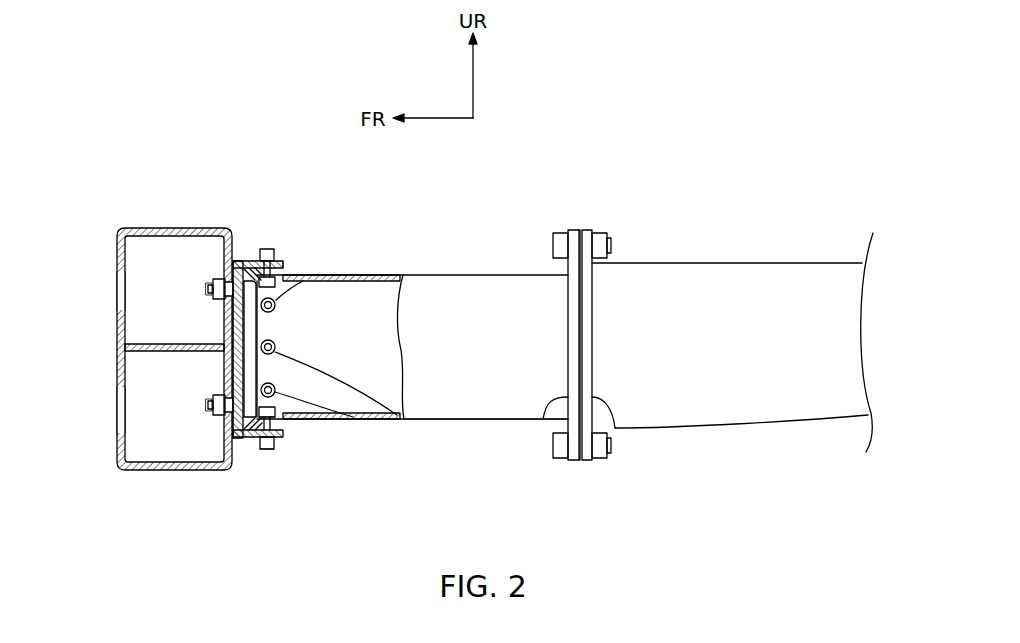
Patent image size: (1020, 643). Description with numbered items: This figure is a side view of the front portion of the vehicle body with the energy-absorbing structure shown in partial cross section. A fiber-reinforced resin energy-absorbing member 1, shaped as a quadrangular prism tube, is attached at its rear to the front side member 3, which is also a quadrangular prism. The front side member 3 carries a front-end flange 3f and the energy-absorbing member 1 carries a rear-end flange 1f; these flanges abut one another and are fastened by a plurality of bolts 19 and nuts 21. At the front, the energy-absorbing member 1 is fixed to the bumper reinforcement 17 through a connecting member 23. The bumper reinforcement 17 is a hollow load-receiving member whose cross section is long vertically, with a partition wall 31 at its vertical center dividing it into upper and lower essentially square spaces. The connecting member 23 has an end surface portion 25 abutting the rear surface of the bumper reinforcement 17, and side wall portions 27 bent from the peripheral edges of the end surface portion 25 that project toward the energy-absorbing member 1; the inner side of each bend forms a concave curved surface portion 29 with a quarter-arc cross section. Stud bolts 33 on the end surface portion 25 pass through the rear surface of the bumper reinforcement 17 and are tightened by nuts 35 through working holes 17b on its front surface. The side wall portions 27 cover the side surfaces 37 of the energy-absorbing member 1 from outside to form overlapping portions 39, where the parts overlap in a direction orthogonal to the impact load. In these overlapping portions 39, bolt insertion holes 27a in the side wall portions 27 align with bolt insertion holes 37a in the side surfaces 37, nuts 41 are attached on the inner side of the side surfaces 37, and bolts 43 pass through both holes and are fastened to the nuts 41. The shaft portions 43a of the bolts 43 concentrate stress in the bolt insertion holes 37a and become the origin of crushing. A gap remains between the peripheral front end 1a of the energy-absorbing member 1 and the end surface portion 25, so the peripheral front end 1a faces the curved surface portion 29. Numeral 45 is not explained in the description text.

The energy-absorbing member 1 is at (430, 270).
The peripheral front end 1a is at (222, 232).
The rear-end flange 1f is at (550, 414).
The front side member 3 is at (718, 262).
The front-end flange 3f is at (613, 427).
The bumper reinforcement 17 is at (182, 228).
The working hole 17b is at (118, 274).
The bolt 19 is at (558, 233).
The nut 21 is at (593, 233).
The connecting member 23 is at (238, 260).
The end surface portion 25 is at (345, 418).
The side wall portion 27 is at (251, 261).
The bolt insertion hole 27a is at (268, 449).
The curved surface portion 29 is at (280, 300).
The partition wall 31 is at (135, 347).
The stud bolt 33 is at (203, 287).
The nut 35 is at (214, 303).
The side surface 37 is at (468, 414).
The bolt insertion hole 37a is at (284, 427).
The overlapping portion 39 is at (287, 261).
The nut 41 is at (284, 283).
The bolt 43 is at (272, 251).
The shaft portion 43a is at (274, 438).
The break line 45 is at (399, 419).